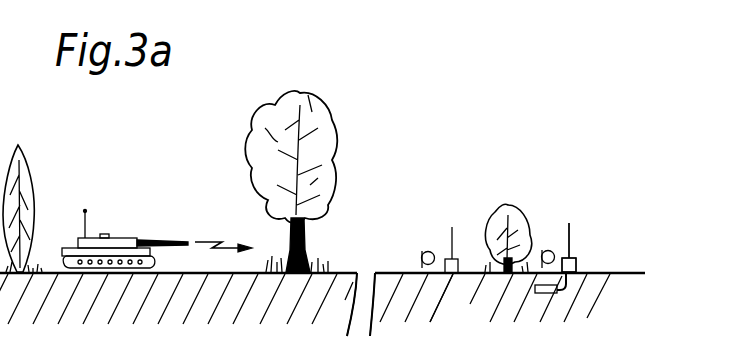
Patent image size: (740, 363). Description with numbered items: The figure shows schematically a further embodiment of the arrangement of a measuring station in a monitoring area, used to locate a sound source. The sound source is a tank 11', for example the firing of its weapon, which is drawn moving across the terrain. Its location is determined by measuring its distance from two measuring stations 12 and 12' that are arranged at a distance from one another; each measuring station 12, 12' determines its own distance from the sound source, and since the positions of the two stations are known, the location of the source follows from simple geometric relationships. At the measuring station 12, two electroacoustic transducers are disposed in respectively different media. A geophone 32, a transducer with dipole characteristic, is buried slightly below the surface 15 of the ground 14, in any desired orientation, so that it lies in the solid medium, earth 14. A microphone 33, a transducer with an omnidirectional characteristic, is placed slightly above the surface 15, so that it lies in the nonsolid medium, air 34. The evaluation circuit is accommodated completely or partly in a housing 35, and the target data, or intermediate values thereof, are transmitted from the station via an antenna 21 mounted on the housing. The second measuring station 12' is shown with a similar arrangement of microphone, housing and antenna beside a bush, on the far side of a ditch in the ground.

The tank 11' is at (116, 214).
The measuring station 12' is at (416, 206).
The measuring station 12 is at (573, 189).
The microphone 33 is at (546, 250).
The antenna 21 is at (571, 235).
The housing 35 is at (576, 261).
The geophone 32 is at (545, 293).
The surface 15 is at (375, 271).
The ground 14 is at (479, 322).
The air 34 is at (508, 99).